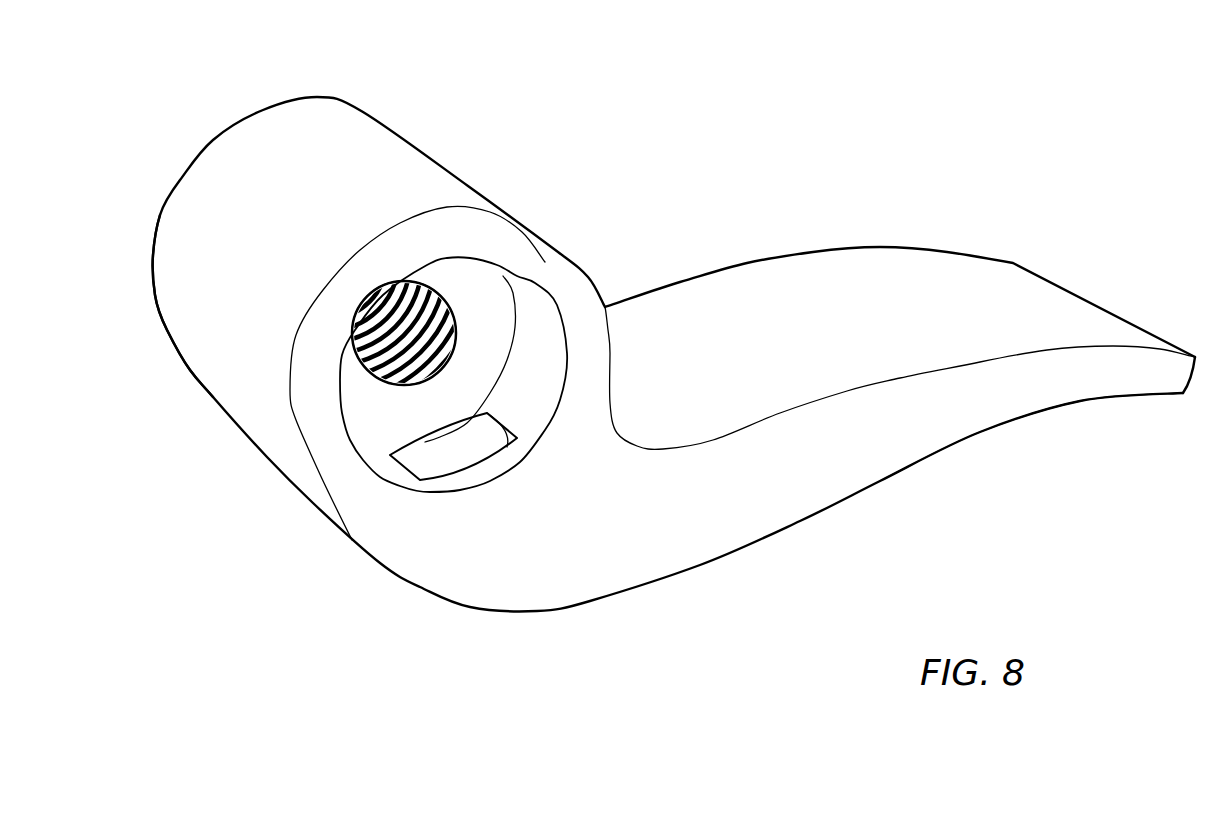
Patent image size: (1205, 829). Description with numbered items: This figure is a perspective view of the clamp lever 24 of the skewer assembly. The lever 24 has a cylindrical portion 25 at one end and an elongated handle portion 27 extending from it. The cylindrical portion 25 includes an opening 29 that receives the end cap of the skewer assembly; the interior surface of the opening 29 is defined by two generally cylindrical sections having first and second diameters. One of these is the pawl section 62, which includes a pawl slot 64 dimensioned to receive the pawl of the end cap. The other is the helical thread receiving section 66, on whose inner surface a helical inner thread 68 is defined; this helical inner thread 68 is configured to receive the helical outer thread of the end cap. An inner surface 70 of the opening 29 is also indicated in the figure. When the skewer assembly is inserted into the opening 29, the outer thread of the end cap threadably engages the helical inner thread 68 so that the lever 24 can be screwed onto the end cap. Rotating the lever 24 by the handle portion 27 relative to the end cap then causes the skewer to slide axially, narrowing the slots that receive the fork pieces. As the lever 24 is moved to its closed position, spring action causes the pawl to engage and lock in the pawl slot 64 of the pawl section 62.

The lever 24 is at (725, 517).
The cylindrical portion 25 is at (182, 442).
The handle portion 27 is at (957, 463).
The opening 29 is at (437, 342).
The pawl section 62 is at (543, 380).
The pawl slot 64 is at (418, 463).
The helical thread receiving section 66 is at (395, 385).
The helical inner thread 68 is at (443, 308).
The inner surface 70 is at (484, 311).